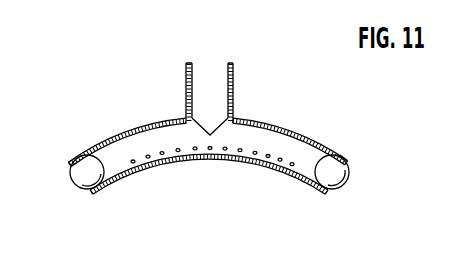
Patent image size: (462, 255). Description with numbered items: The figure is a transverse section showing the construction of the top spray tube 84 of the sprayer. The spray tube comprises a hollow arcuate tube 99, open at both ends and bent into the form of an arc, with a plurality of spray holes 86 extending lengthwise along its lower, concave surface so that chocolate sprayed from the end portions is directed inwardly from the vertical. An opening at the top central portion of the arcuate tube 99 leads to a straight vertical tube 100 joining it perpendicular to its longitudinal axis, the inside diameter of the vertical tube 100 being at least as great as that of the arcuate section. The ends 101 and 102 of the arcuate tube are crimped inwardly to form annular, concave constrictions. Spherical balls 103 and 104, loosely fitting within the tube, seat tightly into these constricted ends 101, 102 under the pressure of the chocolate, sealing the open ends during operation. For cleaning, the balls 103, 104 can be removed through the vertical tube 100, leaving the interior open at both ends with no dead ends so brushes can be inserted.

The top spray tube 84 is at (130, 116).
The spray holes 86 is at (159, 151).
The arcuate tube 99 is at (287, 129).
The vertical tube 100 is at (233, 69).
The crimped end 101 is at (348, 160).
The crimped end 102 is at (93, 193).
The ball 103 is at (341, 172).
The ball 104 is at (83, 177).